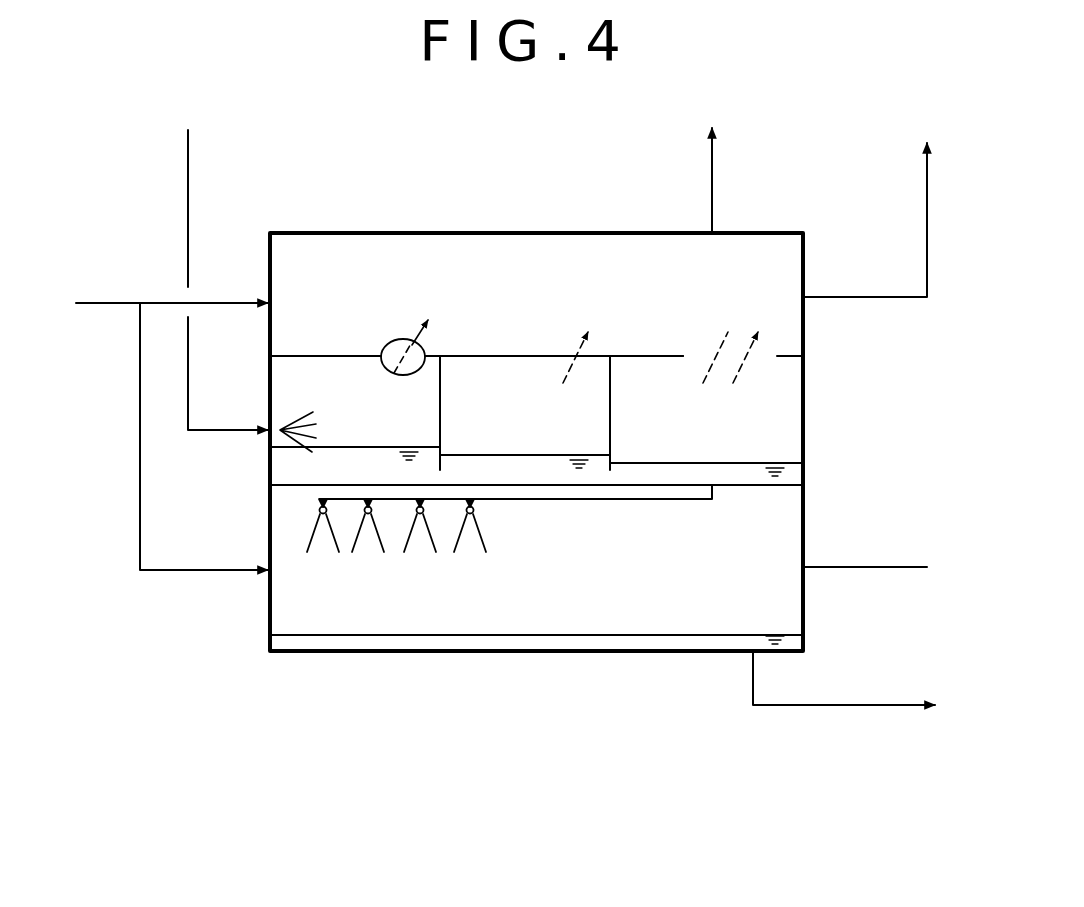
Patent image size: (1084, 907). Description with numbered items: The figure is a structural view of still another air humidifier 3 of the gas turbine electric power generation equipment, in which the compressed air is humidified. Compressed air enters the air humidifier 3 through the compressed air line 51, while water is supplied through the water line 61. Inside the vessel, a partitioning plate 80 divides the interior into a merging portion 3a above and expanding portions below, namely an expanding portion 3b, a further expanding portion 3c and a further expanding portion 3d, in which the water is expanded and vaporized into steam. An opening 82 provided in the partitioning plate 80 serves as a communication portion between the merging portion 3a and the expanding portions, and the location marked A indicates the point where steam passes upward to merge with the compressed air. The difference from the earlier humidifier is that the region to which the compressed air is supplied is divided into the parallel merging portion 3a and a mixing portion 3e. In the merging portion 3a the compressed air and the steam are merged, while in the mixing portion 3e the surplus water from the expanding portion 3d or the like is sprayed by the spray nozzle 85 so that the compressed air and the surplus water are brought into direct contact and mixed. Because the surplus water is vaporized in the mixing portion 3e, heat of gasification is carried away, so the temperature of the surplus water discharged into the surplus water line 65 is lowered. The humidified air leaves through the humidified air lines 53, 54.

The air humidifier 3 is at (537, 232).
The merging portion 3a is at (536, 305).
The expanding portion 3b is at (355, 421).
The expanding portion 3c is at (525, 401).
The expanding portion 3d is at (706, 404).
The mixing portion 3e is at (536, 564).
The compressed air line 51 is at (108, 305).
The humidified air line 53 is at (927, 205).
The humidified air line 54 is at (712, 162).
The water line 61 is at (188, 180).
The surplus water line 65 is at (835, 707).
The partitioning plate 80 is at (496, 355).
The opening 82 is at (758, 360).
The spray nozzle 85 is at (478, 505).
The opening A is at (392, 342).